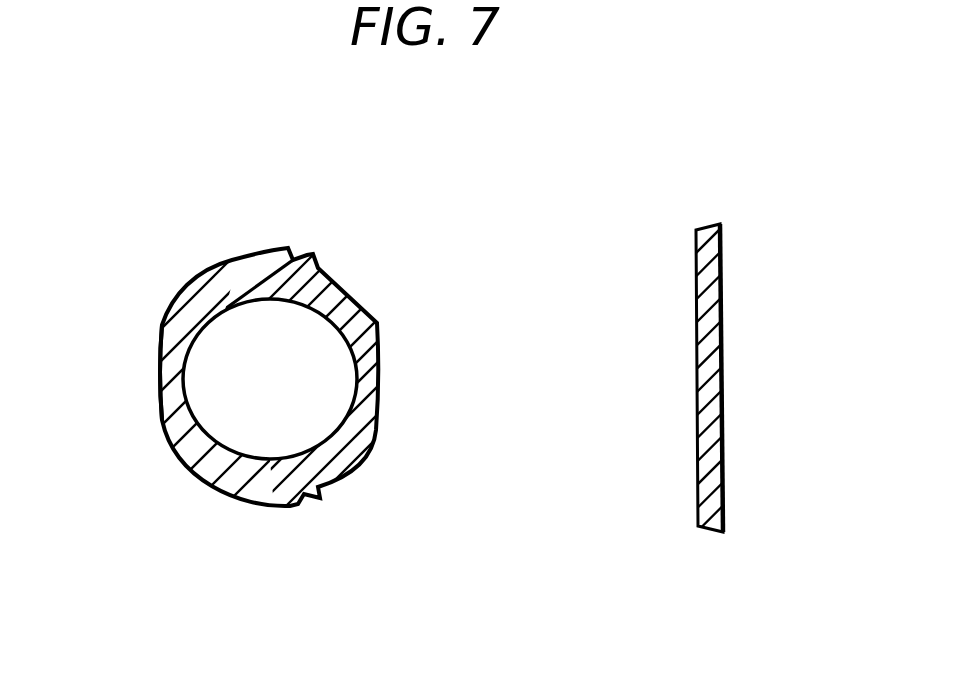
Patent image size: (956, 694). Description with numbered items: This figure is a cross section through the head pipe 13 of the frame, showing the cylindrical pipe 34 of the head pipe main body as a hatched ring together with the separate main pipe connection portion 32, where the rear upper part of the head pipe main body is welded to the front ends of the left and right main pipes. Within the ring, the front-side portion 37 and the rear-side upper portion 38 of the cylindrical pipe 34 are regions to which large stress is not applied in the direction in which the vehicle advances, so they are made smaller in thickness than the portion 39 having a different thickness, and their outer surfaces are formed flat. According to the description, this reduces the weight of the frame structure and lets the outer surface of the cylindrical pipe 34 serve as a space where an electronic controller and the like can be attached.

The head pipe 13 is at (533, 248).
The main pipe connection portion 32 is at (723, 362).
The cylindrical pipe 34 is at (307, 366).
The front-side portion 37 is at (160, 383).
The rear-side upper portion 38 is at (378, 363).
The portion having a different thickness 39 is at (252, 485).